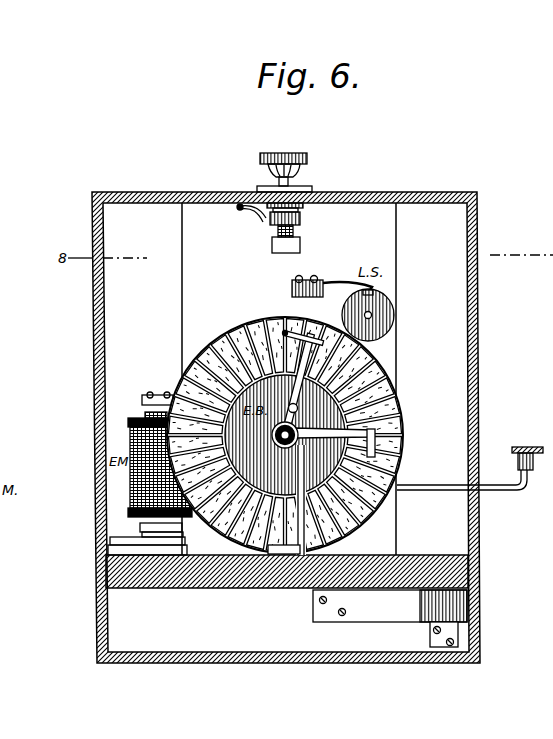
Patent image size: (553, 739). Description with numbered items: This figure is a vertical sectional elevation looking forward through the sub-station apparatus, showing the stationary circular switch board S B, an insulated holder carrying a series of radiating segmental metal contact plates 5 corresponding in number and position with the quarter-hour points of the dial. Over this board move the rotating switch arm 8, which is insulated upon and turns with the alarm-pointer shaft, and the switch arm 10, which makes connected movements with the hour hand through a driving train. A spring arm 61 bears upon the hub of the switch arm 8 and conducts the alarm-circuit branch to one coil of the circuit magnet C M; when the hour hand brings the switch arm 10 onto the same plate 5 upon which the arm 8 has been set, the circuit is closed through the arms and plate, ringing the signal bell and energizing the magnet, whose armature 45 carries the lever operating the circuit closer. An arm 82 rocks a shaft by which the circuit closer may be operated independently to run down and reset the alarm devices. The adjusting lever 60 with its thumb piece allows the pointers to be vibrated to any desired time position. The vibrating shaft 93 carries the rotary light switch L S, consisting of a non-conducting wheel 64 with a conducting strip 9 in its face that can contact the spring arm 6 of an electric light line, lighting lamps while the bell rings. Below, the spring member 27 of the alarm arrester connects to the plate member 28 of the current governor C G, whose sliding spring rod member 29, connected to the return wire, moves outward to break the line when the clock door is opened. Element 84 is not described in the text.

The knob 84 is at (305, 158).
The spring member 27 is at (303, 208).
The arm 82 is at (246, 212).
The spring arm 6 is at (325, 282).
The conducting strip 9 is at (360, 291).
The wheel 64 is at (385, 307).
The vibrating shaft 93 is at (372, 315).
The armature 45 is at (162, 395).
The segmental metal contact plates 5 is at (285, 435).
The rotating switch arm 8 is at (303, 383).
The spring arm 61 is at (333, 435).
The switch arm 10 is at (349, 443).
The adjusting lever 60 is at (452, 486).
The plate member 28 is at (390, 606).
The sliding spring rod member 29 is at (428, 623).